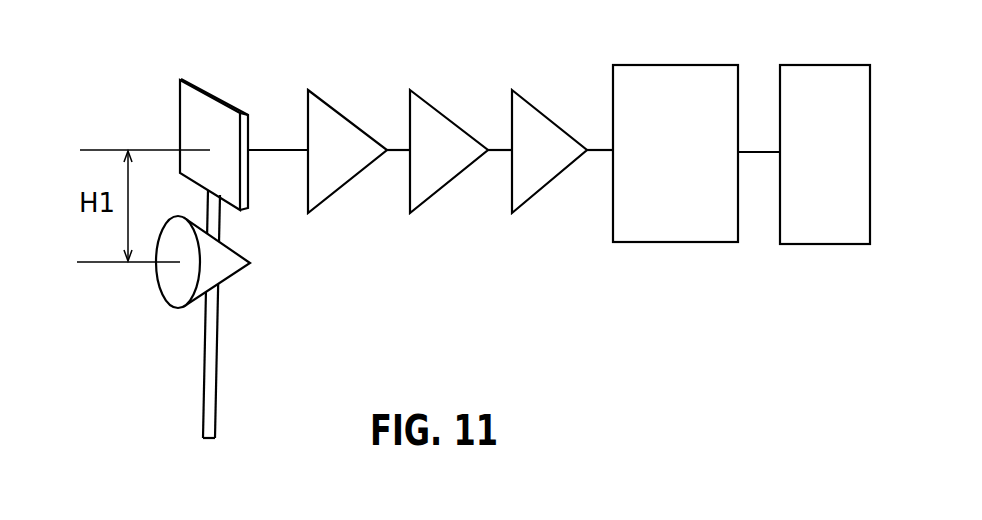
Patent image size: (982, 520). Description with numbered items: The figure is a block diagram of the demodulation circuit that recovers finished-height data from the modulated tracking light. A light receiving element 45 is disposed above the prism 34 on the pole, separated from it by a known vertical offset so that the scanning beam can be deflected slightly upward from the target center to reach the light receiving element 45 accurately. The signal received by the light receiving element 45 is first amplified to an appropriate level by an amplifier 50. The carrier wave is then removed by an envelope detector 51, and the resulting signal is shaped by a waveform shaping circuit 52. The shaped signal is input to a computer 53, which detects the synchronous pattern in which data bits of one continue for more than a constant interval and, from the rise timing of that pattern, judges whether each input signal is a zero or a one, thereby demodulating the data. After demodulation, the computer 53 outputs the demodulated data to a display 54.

The prism 34 is at (223, 255).
The light receiving element 45 is at (200, 103).
The amplifier 50 is at (325, 117).
The envelope detector 51 is at (430, 120).
The waveform shaping circuit 52 is at (530, 117).
The computer 53 is at (663, 78).
The display 54 is at (822, 65).